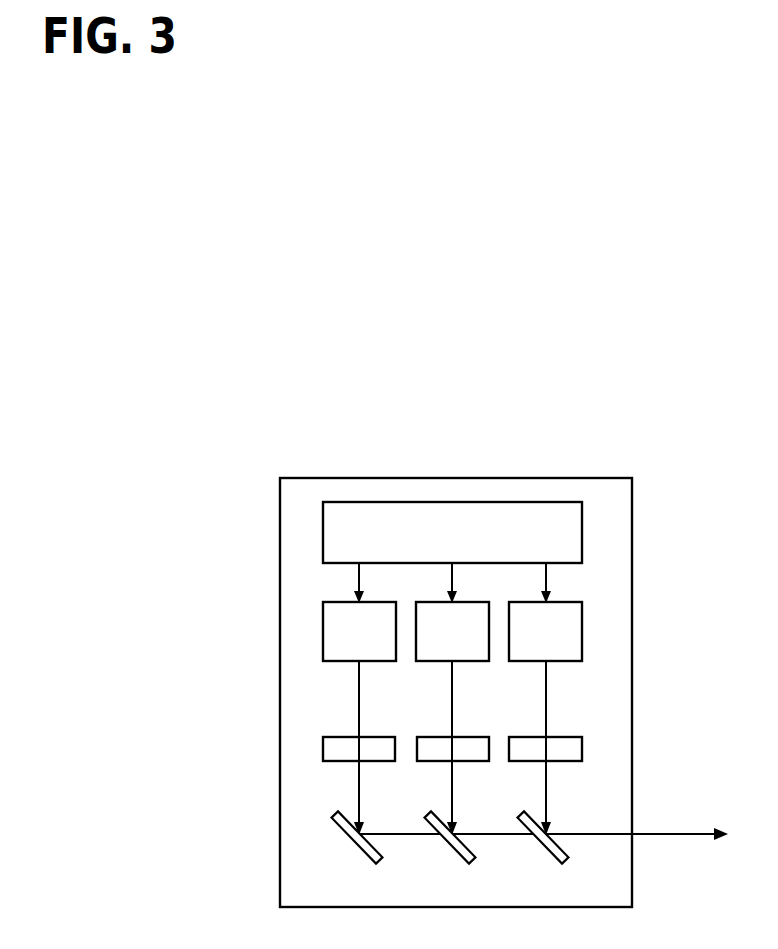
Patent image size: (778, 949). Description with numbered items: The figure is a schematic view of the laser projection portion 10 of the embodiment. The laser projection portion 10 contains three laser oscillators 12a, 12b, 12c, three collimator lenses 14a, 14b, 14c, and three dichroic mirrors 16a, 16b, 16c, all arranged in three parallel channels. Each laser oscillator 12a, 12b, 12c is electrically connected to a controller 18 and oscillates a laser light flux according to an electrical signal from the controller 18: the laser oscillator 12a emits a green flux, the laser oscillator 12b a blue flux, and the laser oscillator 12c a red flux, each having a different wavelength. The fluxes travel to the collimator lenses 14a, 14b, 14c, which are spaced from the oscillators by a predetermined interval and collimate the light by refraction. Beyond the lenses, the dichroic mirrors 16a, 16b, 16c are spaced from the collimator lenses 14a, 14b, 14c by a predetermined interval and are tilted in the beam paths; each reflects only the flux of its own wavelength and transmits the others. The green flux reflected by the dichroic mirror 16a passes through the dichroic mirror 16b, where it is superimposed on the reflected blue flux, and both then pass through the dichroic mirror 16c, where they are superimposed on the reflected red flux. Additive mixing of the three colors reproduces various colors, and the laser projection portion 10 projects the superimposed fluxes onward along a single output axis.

The laser projection portion 10 is at (303, 471).
The controller 18 is at (535, 502).
The laser oscillator 12a is at (346, 663).
The laser oscillator 12b is at (439, 663).
The laser oscillator 12c is at (533, 663).
The collimator lens 14a is at (350, 737).
The collimator lens 14b is at (443, 737).
The collimator lens 14c is at (537, 737).
The dichroic mirror 16a is at (353, 846).
The dichroic mirror 16b is at (446, 846).
The dichroic mirror 16c is at (540, 846).